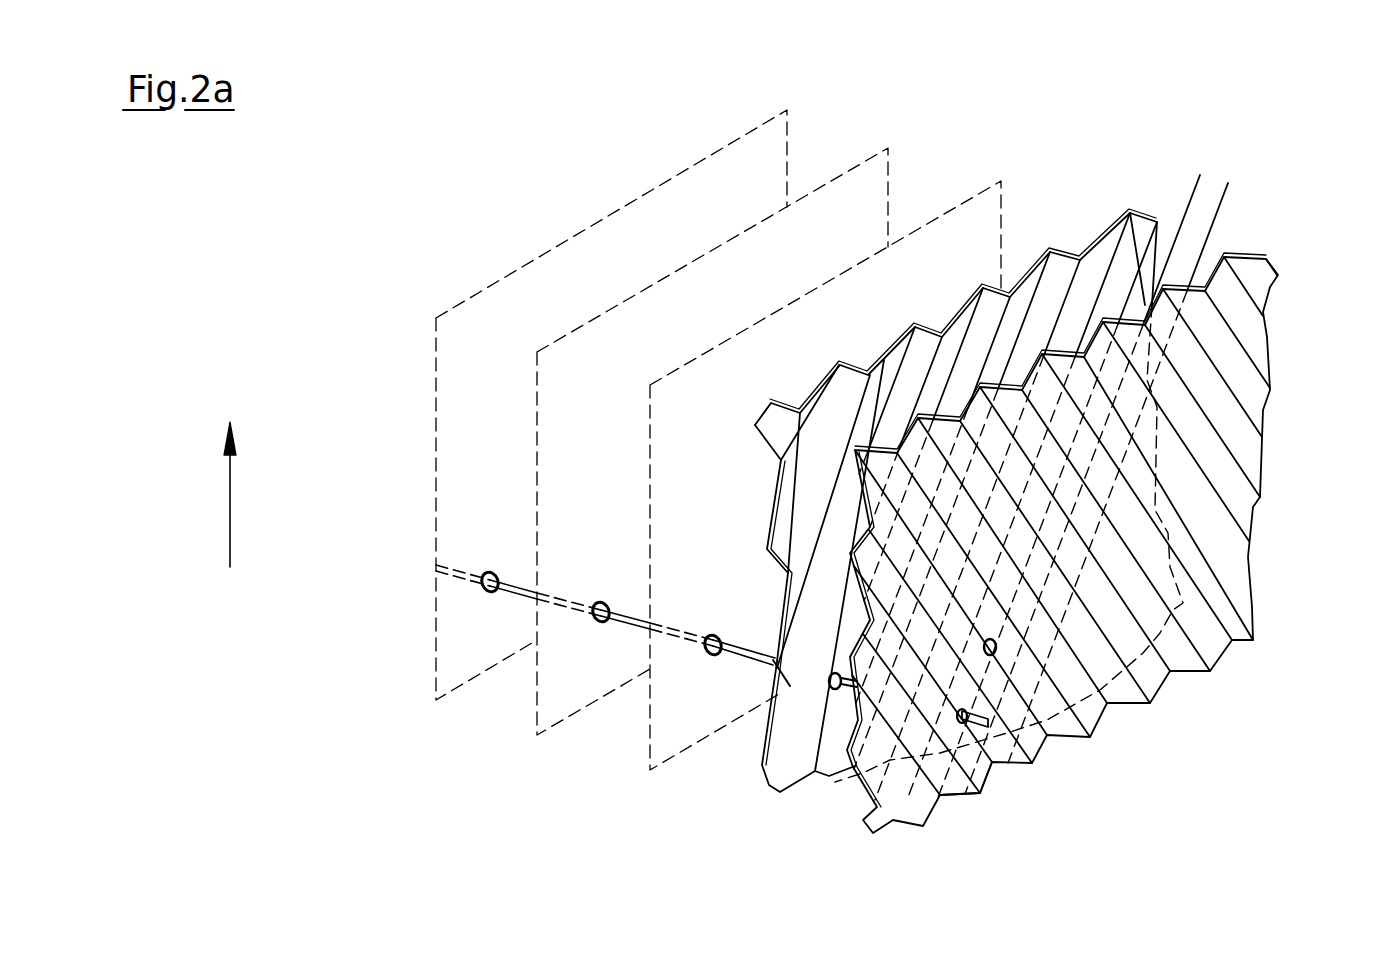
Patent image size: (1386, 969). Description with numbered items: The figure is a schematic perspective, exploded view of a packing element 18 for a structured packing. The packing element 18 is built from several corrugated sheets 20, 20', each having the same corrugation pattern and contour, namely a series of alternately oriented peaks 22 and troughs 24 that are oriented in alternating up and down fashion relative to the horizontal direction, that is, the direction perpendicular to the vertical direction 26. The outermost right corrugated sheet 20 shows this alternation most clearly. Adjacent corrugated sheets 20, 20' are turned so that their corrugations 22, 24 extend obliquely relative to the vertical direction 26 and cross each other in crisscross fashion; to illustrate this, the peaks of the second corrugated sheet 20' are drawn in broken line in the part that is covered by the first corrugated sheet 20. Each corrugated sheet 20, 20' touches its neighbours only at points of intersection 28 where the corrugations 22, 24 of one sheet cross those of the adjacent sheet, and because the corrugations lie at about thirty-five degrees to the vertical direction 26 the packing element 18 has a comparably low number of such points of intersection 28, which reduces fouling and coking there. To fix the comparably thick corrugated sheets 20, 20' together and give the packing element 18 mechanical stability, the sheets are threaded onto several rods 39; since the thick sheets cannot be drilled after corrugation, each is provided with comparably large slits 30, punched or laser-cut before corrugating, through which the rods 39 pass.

The packing element 18 is at (375, 205).
The second corrugated sheet 20' is at (999, 468).
The first corrugated sheet 20 is at (1104, 518).
The peak 22 is at (1240, 337).
The trough 24 is at (1233, 390).
The vertical direction 26 is at (230, 504).
The point of intersection 28 is at (998, 643).
The slit 30 is at (972, 738).
The rod 39 is at (990, 745).